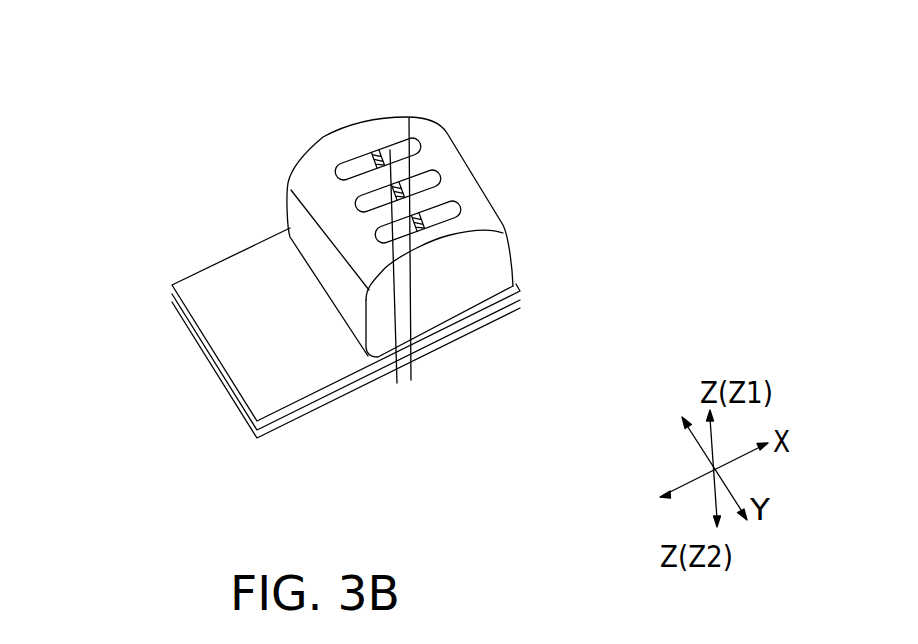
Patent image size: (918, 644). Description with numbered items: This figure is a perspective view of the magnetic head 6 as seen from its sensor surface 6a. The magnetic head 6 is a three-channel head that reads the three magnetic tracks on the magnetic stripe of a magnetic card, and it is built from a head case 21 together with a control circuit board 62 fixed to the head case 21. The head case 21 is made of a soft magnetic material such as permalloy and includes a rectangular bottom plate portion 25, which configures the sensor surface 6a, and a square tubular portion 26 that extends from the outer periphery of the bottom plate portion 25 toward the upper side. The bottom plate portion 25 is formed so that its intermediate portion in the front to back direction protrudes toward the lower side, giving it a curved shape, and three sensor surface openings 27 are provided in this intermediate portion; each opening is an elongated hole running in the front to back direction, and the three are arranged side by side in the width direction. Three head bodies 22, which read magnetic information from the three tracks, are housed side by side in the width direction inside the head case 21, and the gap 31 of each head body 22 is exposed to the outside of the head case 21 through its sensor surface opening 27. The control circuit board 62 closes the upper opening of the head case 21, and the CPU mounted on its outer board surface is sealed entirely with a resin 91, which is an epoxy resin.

The magnetic head 6 is at (502, 109).
The sensor surface 6a is at (285, 231).
The head case 21 is at (452, 257).
The head bodies 22 is at (365, 231).
The bottom plate portion 25 is at (473, 198).
The square tubular portion 26 is at (466, 289).
The sensor surface openings 27 is at (415, 214).
The gap 31 is at (369, 146).
The control circuit board 62 is at (332, 356).
The resin 91 is at (327, 406).